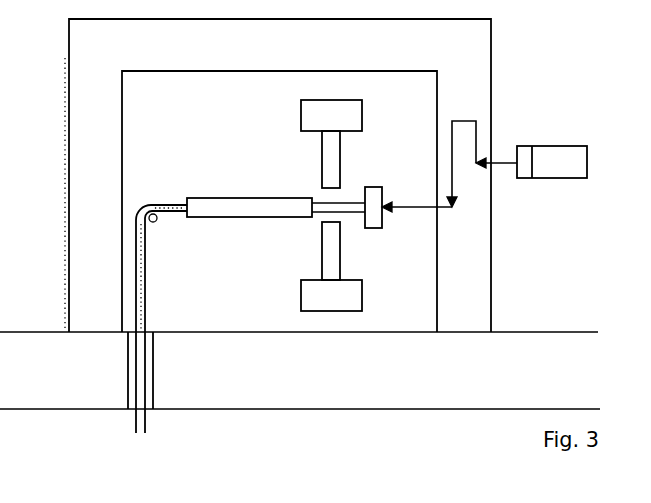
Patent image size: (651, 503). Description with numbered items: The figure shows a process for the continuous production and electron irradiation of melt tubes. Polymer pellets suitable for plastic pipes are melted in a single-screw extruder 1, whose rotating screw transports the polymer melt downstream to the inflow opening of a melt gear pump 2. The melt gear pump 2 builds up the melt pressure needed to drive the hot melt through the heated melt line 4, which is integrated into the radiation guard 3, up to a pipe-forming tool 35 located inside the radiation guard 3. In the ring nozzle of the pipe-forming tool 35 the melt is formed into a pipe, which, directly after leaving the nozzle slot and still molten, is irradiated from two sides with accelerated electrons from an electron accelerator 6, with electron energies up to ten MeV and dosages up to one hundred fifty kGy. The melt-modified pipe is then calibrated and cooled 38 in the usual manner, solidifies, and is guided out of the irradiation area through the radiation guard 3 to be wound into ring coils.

The single-screw extruder 1 is at (572, 157).
The melt gear pump 2 is at (527, 147).
The radiation guard 3 is at (79, 198).
The heated melt line 4 is at (432, 207).
The electron accelerator 6 is at (313, 124).
The pipe-forming tool 35 is at (375, 228).
The calibration and cooling 38 is at (243, 205).